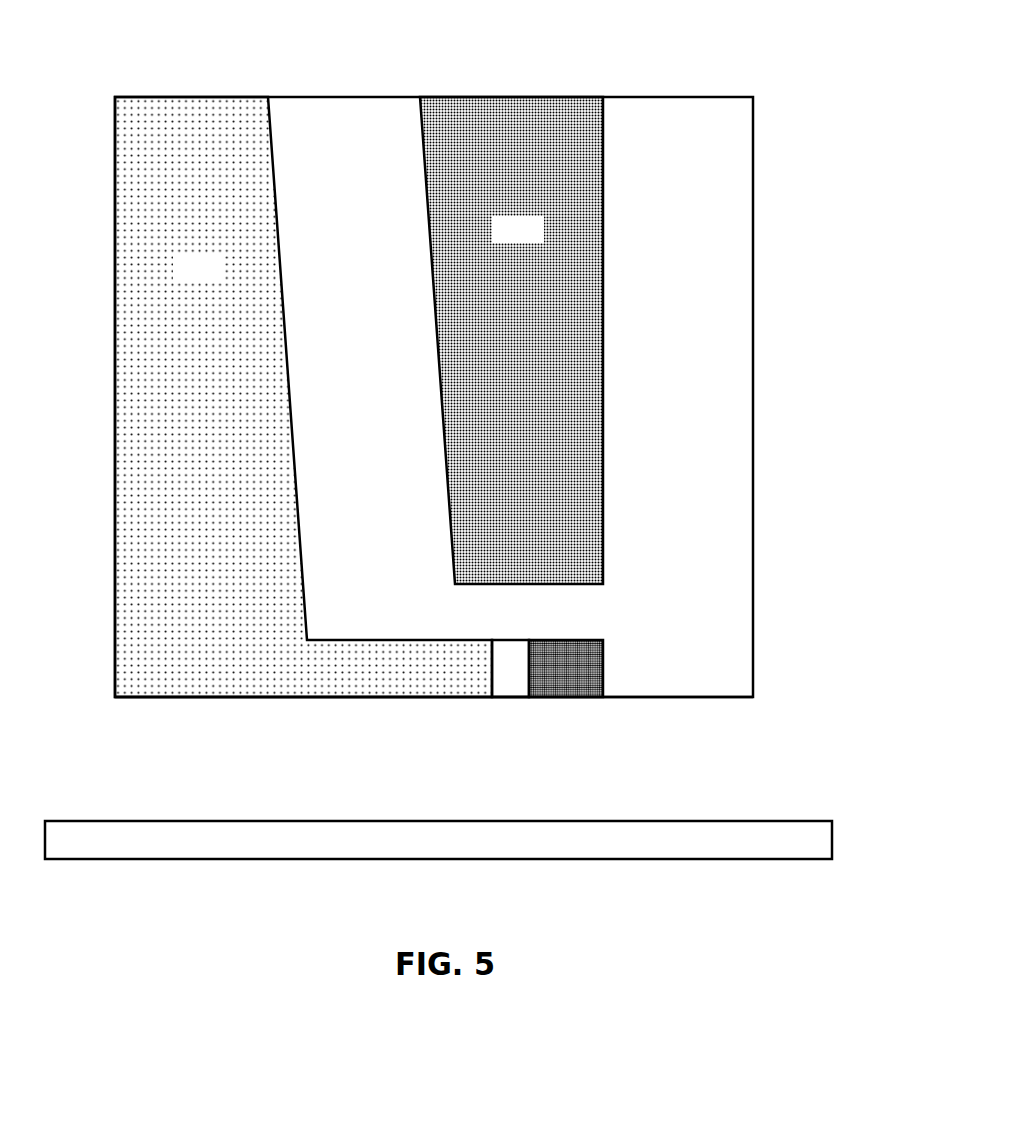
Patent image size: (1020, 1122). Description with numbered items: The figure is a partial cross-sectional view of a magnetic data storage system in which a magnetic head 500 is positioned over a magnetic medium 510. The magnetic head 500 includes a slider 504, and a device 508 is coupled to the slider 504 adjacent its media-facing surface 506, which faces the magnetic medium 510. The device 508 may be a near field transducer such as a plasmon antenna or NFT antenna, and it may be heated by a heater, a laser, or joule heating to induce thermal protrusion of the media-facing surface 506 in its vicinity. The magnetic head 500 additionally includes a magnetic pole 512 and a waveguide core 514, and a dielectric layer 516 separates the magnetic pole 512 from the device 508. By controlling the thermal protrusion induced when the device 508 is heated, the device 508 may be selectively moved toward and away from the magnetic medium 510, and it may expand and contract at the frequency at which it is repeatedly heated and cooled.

The magnetic head 500 is at (507, 437).
The slider 504 is at (697, 162).
The media-facing surface 506 is at (724, 707).
The device 508 is at (586, 646).
The magnetic medium 510 is at (458, 851).
The magnetic pole 512 is at (218, 278).
The waveguide core 514 is at (538, 241).
The dielectric layer 516 is at (510, 685).